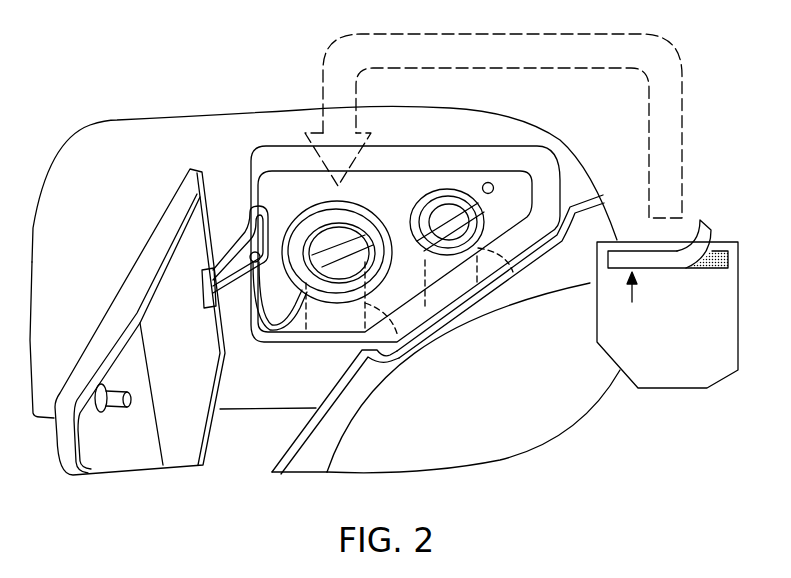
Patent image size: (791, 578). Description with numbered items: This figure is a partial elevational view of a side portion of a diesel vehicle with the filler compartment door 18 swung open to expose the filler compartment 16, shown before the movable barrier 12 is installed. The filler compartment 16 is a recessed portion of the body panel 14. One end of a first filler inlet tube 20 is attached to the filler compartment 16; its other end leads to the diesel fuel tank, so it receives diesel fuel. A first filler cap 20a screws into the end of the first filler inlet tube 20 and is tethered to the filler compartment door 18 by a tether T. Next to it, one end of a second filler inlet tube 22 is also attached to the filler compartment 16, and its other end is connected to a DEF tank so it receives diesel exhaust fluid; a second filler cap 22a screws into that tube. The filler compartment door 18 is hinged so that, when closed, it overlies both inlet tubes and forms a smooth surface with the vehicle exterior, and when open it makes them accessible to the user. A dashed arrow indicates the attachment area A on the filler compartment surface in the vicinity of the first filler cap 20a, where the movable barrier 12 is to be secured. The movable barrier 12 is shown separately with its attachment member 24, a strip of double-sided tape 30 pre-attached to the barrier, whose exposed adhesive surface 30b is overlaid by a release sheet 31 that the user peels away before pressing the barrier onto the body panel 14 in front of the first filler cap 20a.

The movable barrier 12 is at (685, 389).
The body panel 14 is at (118, 118).
The filler compartment 16 is at (280, 150).
The filler compartment door 18 is at (138, 247).
The first filler inlet tube 20 is at (401, 344).
The first filler cap 20a is at (328, 258).
The second filler inlet tube 22 is at (507, 271).
The second filler cap 22a is at (432, 202).
The attachment member 24 is at (633, 298).
The double-sided tape 30 is at (630, 250).
The adhesive surface 30b is at (707, 258).
The release sheet 31 is at (703, 223).
The attachment area A is at (493, 126).
The tether T is at (275, 332).